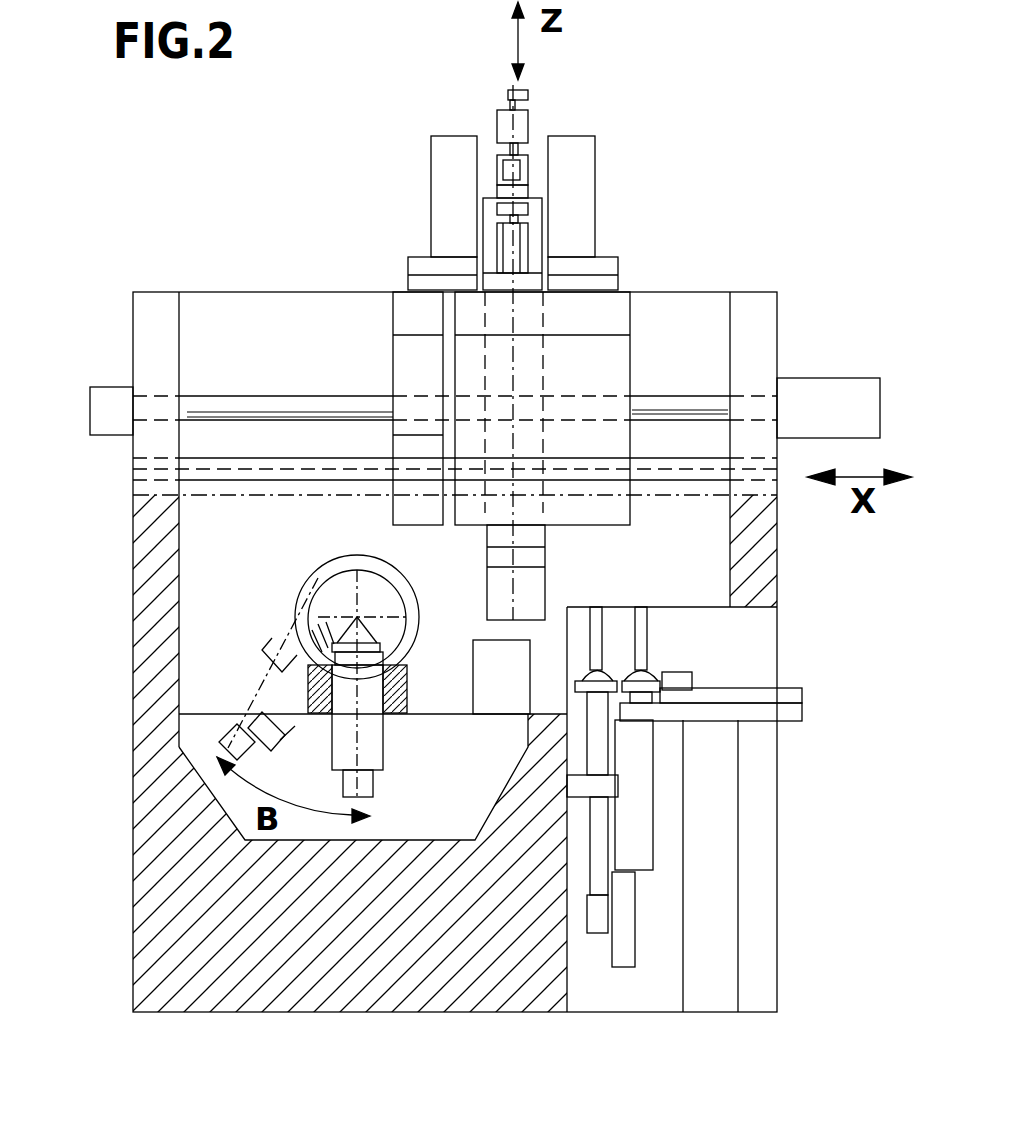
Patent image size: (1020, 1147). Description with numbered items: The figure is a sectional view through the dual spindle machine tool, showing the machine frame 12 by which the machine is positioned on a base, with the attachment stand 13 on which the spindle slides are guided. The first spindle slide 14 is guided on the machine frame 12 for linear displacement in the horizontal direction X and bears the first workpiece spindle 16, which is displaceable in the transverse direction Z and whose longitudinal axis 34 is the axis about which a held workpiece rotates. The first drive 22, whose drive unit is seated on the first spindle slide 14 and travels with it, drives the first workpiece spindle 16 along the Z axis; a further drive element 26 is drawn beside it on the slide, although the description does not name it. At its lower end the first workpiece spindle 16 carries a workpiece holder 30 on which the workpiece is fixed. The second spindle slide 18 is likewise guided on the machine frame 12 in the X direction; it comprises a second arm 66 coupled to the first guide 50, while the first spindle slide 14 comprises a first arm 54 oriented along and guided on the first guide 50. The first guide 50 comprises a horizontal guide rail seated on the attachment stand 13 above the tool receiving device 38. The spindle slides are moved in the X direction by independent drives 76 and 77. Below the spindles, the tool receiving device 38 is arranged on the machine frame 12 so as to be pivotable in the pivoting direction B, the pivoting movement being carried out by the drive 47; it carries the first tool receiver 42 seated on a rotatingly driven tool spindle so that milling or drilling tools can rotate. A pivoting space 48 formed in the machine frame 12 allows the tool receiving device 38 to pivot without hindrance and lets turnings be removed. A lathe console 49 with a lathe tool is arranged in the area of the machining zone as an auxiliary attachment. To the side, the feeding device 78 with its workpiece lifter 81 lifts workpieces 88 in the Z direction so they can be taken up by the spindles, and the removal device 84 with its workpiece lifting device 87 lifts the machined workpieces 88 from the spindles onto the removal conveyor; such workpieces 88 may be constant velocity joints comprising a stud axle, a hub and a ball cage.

The machine frame 12 is at (323, 938).
The attachment stand 13 is at (120, 518).
The first spindle slide 14 is at (625, 345).
The first workpiece spindle 16 is at (538, 212).
The second spindle slide 18 is at (395, 290).
The first drive 22 is at (563, 160).
The column 26 is at (452, 158).
The workpiece holder 30 is at (527, 590).
The longitudinal axis 34 is at (513, 313).
The tool receiving device 38 is at (237, 683).
The first tool receiver 42 is at (298, 626).
The drive 47 is at (325, 572).
The pivoting space 48 is at (447, 815).
The lathe console 49 is at (485, 640).
The first guide 50 is at (777, 475).
The first arm 54 is at (597, 447).
The second arm 66 is at (410, 357).
The drive 76 is at (833, 395).
The drive 77 is at (108, 395).
The feeding device 78 is at (820, 712).
The workpiece lifter 81 is at (638, 826).
The removal device 84 is at (664, 630).
The workpiece lifting device 87 is at (595, 867).
The workpieces 88 is at (614, 657).